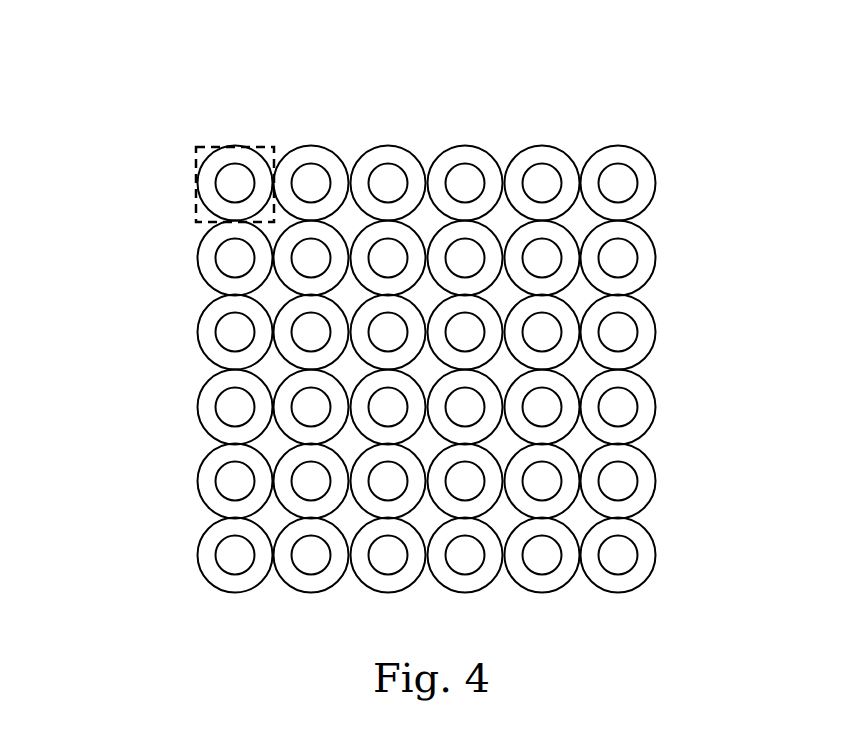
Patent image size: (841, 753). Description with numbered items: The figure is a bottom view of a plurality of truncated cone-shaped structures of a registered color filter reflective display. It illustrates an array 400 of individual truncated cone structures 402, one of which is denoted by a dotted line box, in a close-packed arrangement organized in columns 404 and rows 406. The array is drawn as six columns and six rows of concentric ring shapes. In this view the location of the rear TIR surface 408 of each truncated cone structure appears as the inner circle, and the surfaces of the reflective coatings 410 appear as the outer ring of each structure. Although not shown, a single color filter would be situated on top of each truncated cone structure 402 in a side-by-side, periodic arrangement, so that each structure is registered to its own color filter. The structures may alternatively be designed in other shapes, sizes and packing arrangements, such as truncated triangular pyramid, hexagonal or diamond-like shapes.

The array 400 is at (558, 133).
The truncated cone structure 402 is at (195, 212).
The columns 404 is at (352, 145).
The rows 406 is at (672, 145).
The rear TIR surface 408 is at (618, 331).
The reflective coatings 410 is at (648, 410).